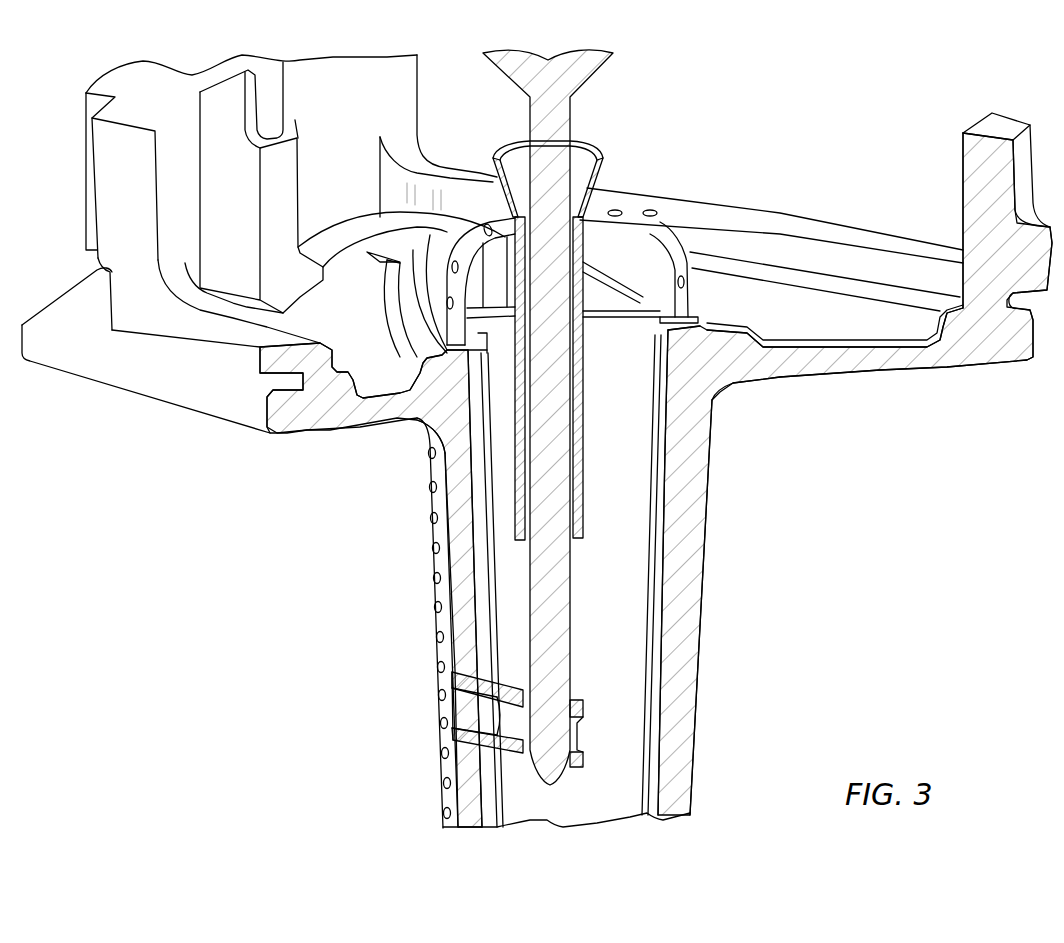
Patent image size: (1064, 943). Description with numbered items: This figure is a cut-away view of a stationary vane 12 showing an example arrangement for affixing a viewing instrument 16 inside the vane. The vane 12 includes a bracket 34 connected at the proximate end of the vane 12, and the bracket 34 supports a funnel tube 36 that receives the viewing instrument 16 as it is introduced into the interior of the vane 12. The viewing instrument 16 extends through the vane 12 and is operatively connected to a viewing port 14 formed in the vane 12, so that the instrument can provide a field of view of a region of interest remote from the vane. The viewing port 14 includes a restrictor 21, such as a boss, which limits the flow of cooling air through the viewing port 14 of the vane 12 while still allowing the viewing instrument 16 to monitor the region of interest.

The vane 12 is at (430, 598).
The viewing port 14 is at (450, 673).
The viewing instrument 16 is at (570, 607).
The restrictor 21 is at (507, 715).
The bracket 34 is at (687, 233).
The funnel tube 36 is at (593, 157).